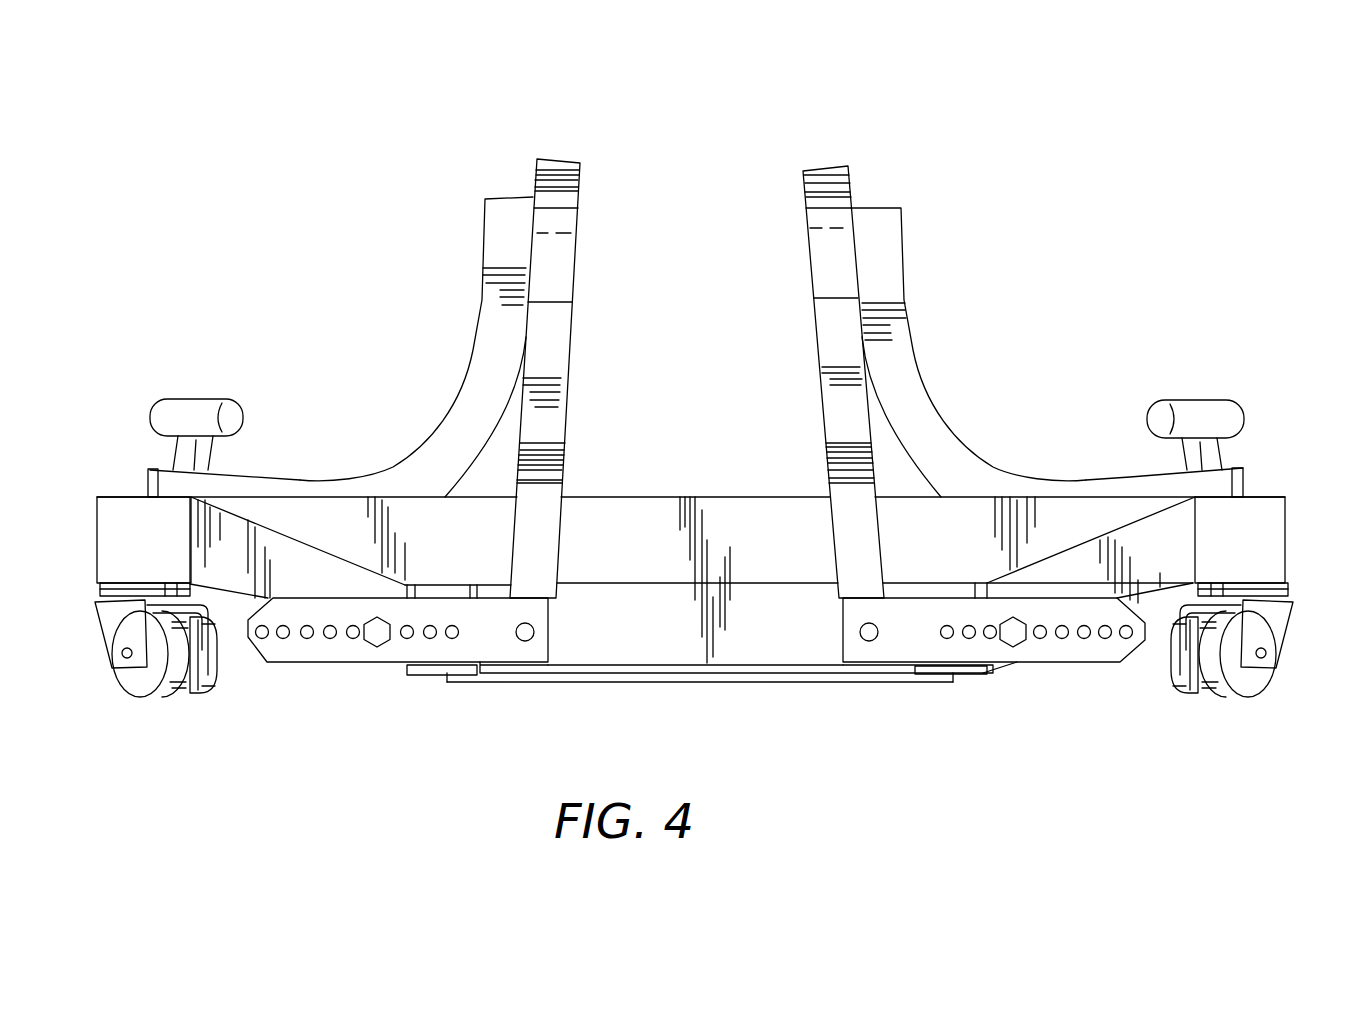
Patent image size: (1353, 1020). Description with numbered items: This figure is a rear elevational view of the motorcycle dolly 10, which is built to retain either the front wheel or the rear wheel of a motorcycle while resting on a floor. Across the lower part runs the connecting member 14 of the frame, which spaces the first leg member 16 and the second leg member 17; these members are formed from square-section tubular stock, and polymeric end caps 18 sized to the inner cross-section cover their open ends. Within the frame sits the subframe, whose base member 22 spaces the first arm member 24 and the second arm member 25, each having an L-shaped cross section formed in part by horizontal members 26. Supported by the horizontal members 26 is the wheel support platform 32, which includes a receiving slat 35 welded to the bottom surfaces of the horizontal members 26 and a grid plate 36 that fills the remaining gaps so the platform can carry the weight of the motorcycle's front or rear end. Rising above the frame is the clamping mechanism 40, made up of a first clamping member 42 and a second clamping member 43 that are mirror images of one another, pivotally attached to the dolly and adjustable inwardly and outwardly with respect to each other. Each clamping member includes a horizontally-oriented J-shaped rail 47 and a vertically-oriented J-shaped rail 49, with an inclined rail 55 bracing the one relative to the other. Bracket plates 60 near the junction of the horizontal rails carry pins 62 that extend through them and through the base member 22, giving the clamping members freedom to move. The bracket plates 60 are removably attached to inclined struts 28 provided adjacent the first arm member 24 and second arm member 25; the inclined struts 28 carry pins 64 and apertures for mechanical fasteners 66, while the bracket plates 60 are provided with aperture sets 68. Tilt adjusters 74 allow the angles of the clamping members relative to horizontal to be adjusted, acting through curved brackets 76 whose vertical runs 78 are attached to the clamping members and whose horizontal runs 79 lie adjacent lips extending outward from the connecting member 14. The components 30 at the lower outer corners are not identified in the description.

The motorcycle dolly 10 is at (300, 215).
The connecting member 14 is at (632, 515).
The first leg member 16 is at (97, 550).
The second leg member 17 is at (1287, 527).
The end caps 18 is at (103, 523).
The base member 22 is at (760, 653).
The first arm member 24 is at (440, 686).
The second arm member 25 is at (985, 675).
The horizontal members 26 is at (415, 676).
The inclined struts 28 is at (237, 593).
The caster 30 is at (136, 688).
The wheel support platform 32 is at (652, 698).
The receiving slat 35 is at (553, 672).
The grid plate 36 is at (502, 672).
The clamping mechanism 40 is at (646, 148).
The first clamping member 42 is at (583, 356).
The second clamping member 43 is at (798, 291).
The horizontally-oriented J-shaped rail 47 is at (540, 528).
The vertically-oriented J-shaped rail 49 is at (560, 262).
The inclined rail 55 is at (548, 430).
The bracket plates 60 is at (463, 612).
The pins 62 is at (533, 632).
The pins 64 is at (328, 640).
The mechanical fasteners 66 is at (377, 647).
The aperture sets 68 is at (303, 662).
The tilt adjusters 74 is at (183, 390).
The brackets 76 is at (450, 428).
The vertical runs 78 is at (493, 243).
The horizontal runs 79 is at (278, 485).